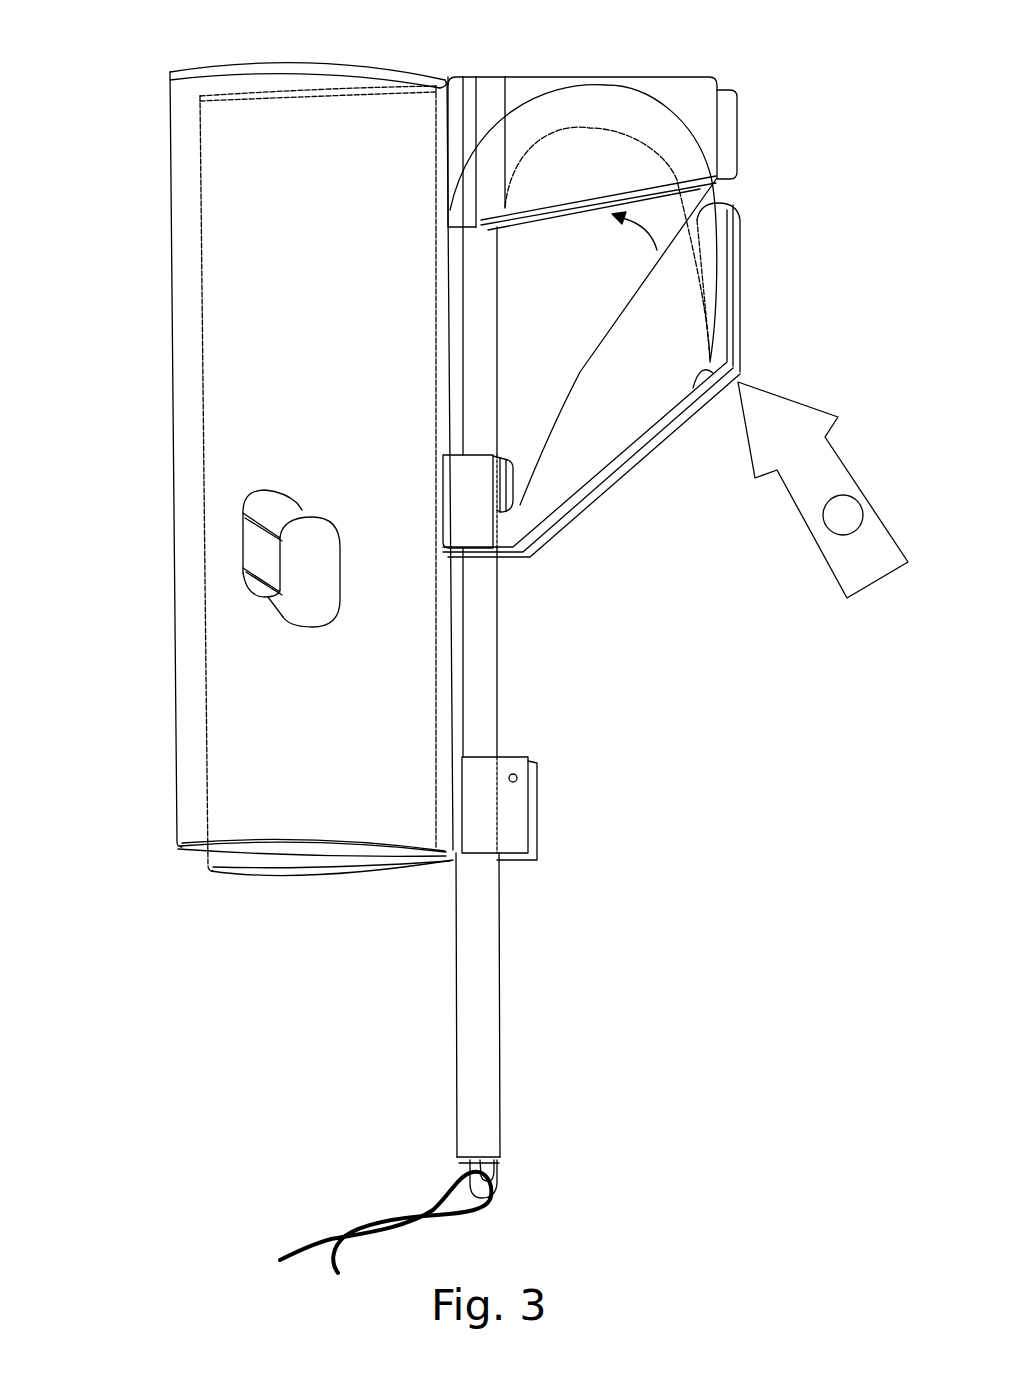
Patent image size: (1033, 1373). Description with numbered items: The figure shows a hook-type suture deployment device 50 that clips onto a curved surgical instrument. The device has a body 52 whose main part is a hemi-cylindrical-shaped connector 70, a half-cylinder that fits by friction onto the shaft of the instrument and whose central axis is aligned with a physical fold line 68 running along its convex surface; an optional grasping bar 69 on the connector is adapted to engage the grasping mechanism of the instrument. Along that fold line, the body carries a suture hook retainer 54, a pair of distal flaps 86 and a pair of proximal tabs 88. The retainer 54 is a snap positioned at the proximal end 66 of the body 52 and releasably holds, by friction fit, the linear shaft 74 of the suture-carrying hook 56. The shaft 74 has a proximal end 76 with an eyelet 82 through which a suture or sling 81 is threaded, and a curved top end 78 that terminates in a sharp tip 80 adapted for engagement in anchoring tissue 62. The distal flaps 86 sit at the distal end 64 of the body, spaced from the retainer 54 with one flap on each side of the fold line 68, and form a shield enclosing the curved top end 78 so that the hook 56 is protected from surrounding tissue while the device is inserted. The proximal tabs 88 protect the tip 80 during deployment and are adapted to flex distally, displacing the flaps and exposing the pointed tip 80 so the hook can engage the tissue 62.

The suture deployment device 50 is at (138, 385).
The body 52 is at (237, 463).
The suture hook retainer 54 is at (537, 775).
The suture-carrying hook 56 is at (495, 357).
The anchoring tissue 62 is at (798, 488).
The distal end 64 is at (175, 93).
The proximal end 66 is at (257, 832).
The physical fold line 68 is at (434, 295).
The grasping bar 69 is at (250, 595).
The hemi-cylindrical-shaped connector 70 is at (228, 742).
The linear shaft 74 is at (497, 626).
The proximal end 76 is at (500, 952).
The curved top end 78 is at (552, 87).
The sharp tip 80 is at (693, 398).
The suture or sling 81 is at (368, 1217).
The eyelet 82 is at (498, 1168).
The distal flaps 86 is at (672, 85).
The proximal tabs 88 is at (740, 292).